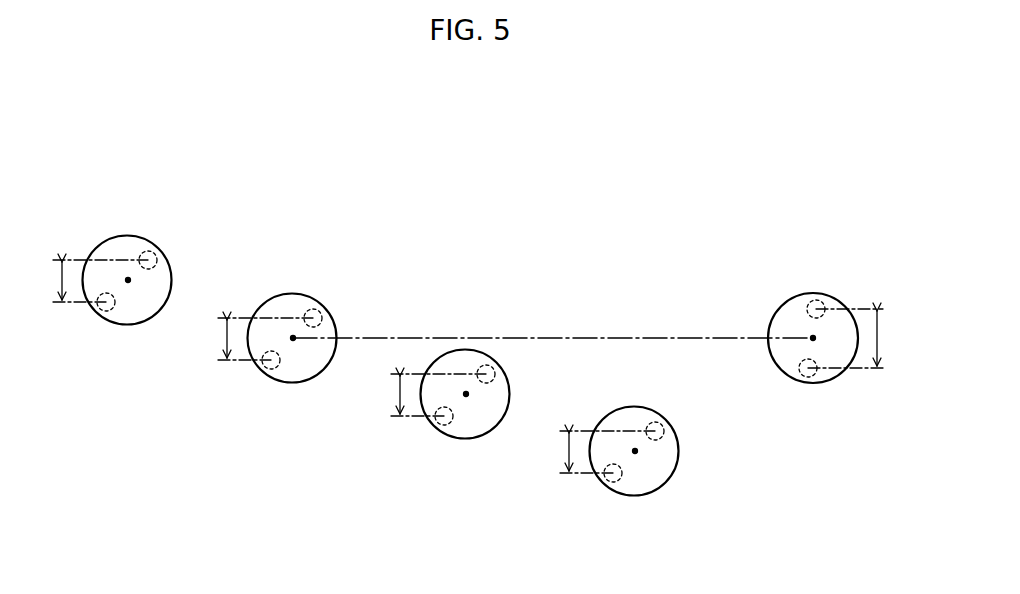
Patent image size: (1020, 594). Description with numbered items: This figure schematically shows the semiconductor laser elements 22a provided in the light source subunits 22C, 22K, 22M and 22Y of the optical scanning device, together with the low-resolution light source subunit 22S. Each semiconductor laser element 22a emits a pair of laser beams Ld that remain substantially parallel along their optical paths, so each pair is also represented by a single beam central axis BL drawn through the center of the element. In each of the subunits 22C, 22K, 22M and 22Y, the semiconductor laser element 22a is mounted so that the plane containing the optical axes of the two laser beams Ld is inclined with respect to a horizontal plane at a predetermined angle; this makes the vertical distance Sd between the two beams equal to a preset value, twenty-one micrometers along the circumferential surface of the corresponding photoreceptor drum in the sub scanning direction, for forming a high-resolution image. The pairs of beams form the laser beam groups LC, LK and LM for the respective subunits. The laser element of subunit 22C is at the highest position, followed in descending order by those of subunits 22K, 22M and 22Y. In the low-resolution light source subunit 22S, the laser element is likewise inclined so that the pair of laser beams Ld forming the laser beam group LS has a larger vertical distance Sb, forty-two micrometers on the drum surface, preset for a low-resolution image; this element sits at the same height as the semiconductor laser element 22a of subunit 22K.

The light source subunit 22C is at (133, 232).
The light source subunit 22K is at (531, 304).
The light source subunit 22M is at (465, 360).
The light source subunit 22Y is at (634, 417).
The low-resolution light source subunit 22S is at (817, 289).
The semiconductor laser element 22a is at (108, 253).
The laser beam Ld is at (153, 253).
The beam central axis BL is at (128, 280).
The laser beam group LC is at (168, 252).
The laser beam group LK is at (363, 294).
The laser beam group LM is at (537, 350).
The laser beam group LS is at (845, 303).
The vertical distance Sd is at (343, 366).
The vertical distance Sb is at (858, 338).